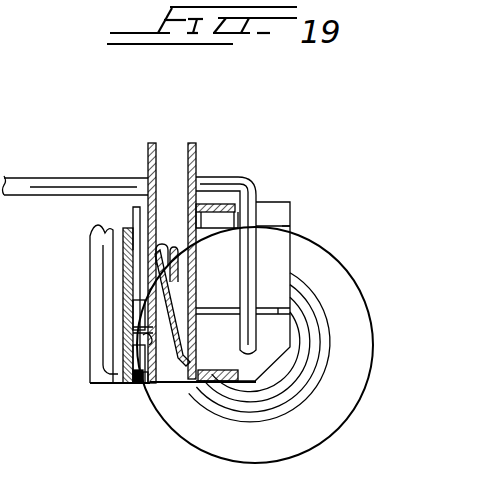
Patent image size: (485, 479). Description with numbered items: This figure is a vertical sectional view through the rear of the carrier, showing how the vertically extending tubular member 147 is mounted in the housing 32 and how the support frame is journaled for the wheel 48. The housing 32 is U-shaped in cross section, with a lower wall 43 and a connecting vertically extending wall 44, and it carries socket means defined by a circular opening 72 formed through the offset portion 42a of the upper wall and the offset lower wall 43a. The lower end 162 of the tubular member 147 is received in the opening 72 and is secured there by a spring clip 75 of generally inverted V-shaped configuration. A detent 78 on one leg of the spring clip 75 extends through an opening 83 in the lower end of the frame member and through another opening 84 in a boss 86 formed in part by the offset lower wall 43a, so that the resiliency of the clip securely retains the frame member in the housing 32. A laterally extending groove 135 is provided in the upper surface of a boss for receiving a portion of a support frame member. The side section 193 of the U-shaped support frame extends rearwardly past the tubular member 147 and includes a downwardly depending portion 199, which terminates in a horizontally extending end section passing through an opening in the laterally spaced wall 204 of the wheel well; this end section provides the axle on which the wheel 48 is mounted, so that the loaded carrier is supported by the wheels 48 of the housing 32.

The side section 193 is at (85, 182).
The tubular member 147 is at (197, 175).
The circular opening 72 is at (187, 205).
The housing 32 is at (274, 201).
The wall of wheel well 204 is at (292, 227).
The depending portion 199 is at (248, 243).
The offset portion of upper wall 42a is at (148, 238).
The connecting wall 44 is at (133, 265).
The boss 86 is at (133, 316).
The detent 78 is at (143, 337).
The opening in boss 84 is at (128, 346).
The opening in frame section 83 is at (150, 340).
The spring clip 75 is at (186, 298).
The offset lower wall 43a is at (137, 386).
The lower end of tubular member 162 is at (150, 386).
The lower wall 43 is at (213, 383).
The wheel 48 is at (363, 319).
The laterally extending groove 135 is at (112, 230).